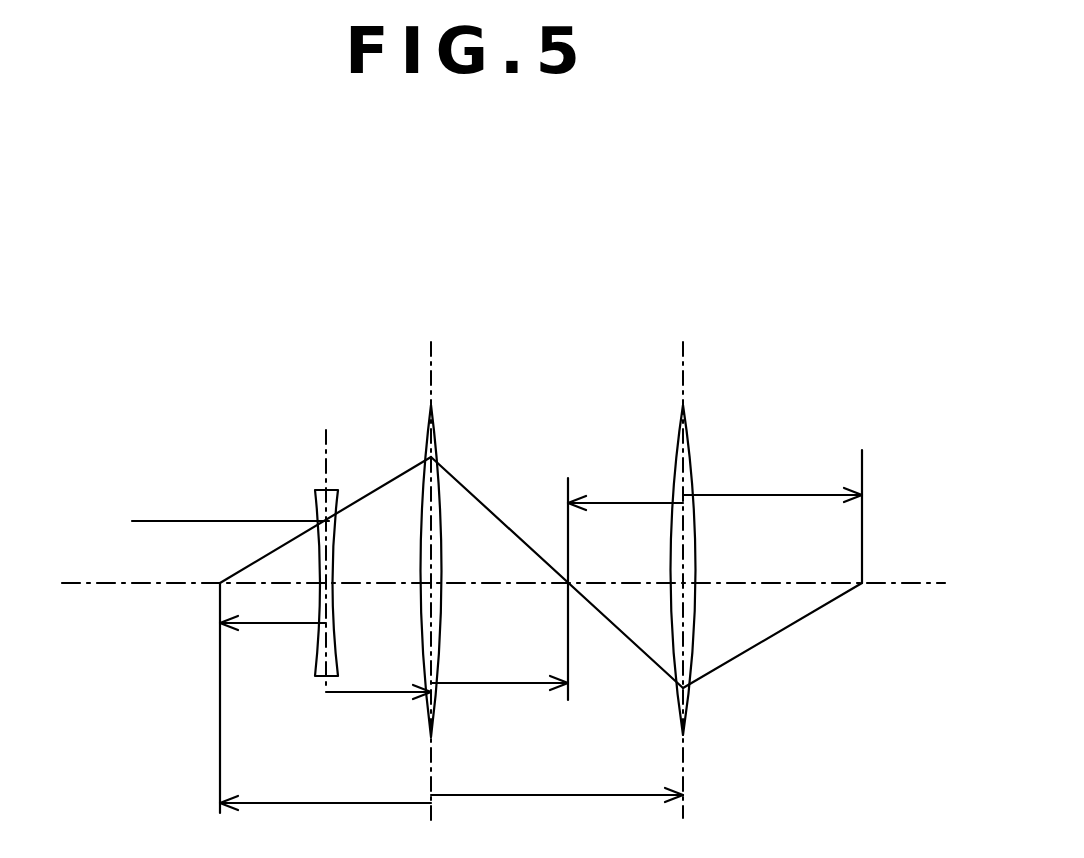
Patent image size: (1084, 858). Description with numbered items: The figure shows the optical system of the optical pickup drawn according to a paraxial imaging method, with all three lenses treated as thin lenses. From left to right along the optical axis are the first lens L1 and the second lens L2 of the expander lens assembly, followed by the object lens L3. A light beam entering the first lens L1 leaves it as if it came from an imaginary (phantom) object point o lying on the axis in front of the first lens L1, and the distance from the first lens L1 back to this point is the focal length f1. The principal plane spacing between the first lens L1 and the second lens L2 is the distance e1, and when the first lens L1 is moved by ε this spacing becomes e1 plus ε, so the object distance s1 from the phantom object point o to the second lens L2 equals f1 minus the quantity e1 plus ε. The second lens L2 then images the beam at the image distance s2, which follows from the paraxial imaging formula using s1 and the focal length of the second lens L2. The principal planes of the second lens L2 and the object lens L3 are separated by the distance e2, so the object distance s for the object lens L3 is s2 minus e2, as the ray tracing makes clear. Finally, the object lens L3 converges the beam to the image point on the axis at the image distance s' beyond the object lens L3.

The first lens L1 is at (318, 501).
The second lens L2 is at (424, 428).
The object lens L3 is at (672, 448).
The imaginary object point o is at (219, 679).
The focal length of the first lens f1 is at (273, 640).
The principal plane distance between the first and second lenses e1 is at (375, 710).
The image distance of the second lens s2 is at (499, 667).
The object distance of the object lens s is at (625, 489).
The image distance of the object lens s' is at (772, 472).
The object distance of the second lens s1 is at (325, 788).
The principal plane distance between the second lens and the object lens e2 is at (557, 779).